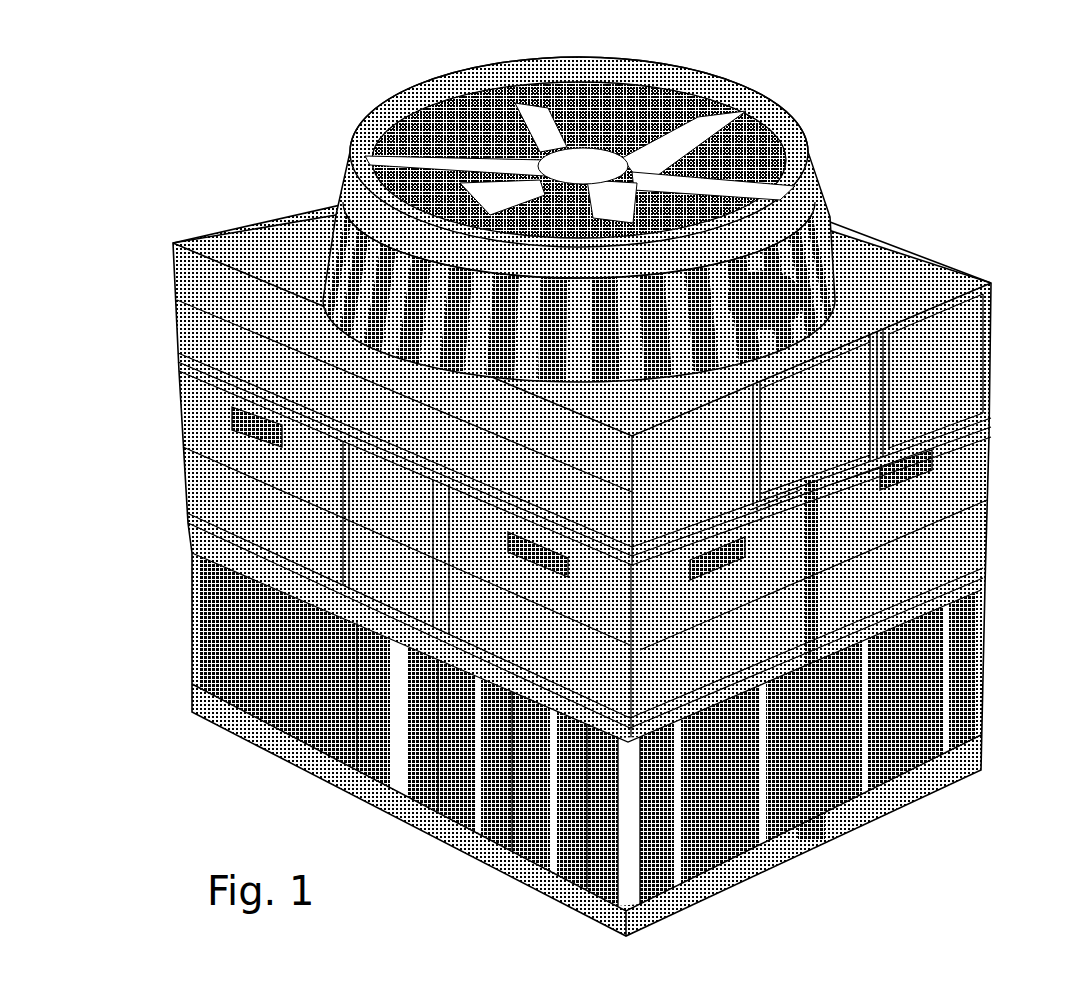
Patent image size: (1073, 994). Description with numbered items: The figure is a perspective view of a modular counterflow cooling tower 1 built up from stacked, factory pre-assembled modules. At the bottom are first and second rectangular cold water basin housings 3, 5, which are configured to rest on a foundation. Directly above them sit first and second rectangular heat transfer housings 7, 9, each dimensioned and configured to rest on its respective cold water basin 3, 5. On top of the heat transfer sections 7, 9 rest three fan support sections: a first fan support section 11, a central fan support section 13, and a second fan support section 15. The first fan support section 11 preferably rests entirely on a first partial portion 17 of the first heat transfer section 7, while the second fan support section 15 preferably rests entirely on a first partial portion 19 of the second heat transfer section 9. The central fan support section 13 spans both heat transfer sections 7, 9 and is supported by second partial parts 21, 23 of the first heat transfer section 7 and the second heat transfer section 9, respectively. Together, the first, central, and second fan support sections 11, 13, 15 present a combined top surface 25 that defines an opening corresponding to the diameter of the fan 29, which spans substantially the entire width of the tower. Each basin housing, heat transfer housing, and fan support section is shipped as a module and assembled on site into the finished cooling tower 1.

The modular counterflow cooling tower 1 is at (1002, 118).
The first rectangular cold water basin housing 3 is at (402, 766).
The second rectangular cold water basin housing 5 is at (983, 642).
The first rectangular heat transfer housing 7 is at (190, 433).
The second rectangular heat transfer housing 9 is at (991, 516).
The first fan support section 11 is at (205, 238).
The central fan support section 13 is at (808, 405).
The second fan support section 15 is at (973, 280).
The first partial portion of the first heat transfer section 17 is at (671, 563).
The first partial portion of the second heat transfer section 19 is at (983, 417).
The second partial part of the first heat transfer section 21 is at (778, 503).
The second partial part of the second heat transfer section 23 is at (846, 475).
The combined top surface 25 is at (310, 223).
The fan 29 is at (648, 143).